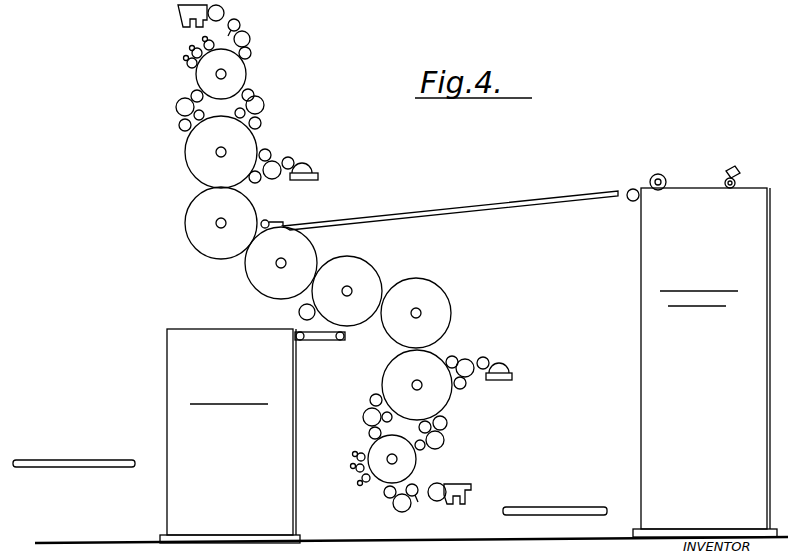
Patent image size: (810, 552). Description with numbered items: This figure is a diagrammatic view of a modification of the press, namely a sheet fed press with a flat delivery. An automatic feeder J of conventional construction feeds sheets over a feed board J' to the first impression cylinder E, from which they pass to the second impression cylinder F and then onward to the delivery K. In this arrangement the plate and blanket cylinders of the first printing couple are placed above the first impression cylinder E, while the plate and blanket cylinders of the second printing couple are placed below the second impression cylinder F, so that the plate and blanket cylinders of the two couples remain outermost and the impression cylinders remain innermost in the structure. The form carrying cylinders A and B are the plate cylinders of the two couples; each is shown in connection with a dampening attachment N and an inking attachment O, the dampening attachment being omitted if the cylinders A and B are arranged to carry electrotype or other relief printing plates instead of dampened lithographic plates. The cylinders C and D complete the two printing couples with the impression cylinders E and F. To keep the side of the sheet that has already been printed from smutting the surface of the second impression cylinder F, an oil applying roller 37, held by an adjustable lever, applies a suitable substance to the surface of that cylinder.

The form carrying cylinder A is at (221, 152).
The form carrying cylinder B is at (417, 385).
The impression cylinder C is at (221, 223).
The impression cylinder D is at (416, 313).
The first impression cylinder E is at (281, 263).
The second impression cylinder F is at (347, 291).
The inking attachment O is at (323, 266).
The dampening attachment N is at (380, 263).
The automatic feeder J is at (640, 340).
The feed board J' is at (450, 200).
The delivery K is at (179, 420).
The oil applying roller 37 is at (299, 312).